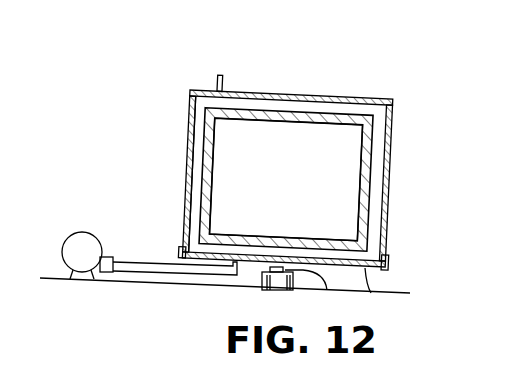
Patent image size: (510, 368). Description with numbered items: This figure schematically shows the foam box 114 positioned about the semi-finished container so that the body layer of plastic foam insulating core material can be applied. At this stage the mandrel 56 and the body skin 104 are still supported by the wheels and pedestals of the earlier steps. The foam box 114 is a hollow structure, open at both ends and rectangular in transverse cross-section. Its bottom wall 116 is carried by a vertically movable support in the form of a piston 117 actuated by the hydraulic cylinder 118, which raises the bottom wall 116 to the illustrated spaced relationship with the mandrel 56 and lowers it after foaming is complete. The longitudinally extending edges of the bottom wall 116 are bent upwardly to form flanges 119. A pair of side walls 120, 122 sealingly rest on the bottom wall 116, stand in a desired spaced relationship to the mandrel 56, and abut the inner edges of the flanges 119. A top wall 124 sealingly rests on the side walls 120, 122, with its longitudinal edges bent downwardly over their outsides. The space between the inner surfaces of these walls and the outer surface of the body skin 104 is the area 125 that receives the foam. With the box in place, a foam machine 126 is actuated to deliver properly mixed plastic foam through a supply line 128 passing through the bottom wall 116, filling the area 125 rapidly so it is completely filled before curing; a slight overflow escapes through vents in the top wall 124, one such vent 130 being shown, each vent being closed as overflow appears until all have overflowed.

The foam box 114 is at (243, 83).
The vent 130 is at (217, 80).
The top wall 124 is at (307, 93).
The body skin 104 is at (335, 116).
The area 125 is at (198, 153).
The mandrel 56 is at (360, 172).
The side wall 120 is at (192, 188).
The side wall 122 is at (388, 183).
The foam machine 126 is at (80, 246).
The flanges 119 is at (183, 250).
The supply line 128 is at (147, 267).
The hydraulic cylinder 118 is at (280, 287).
The piston 117 is at (310, 284).
The bottom wall 116 is at (371, 293).